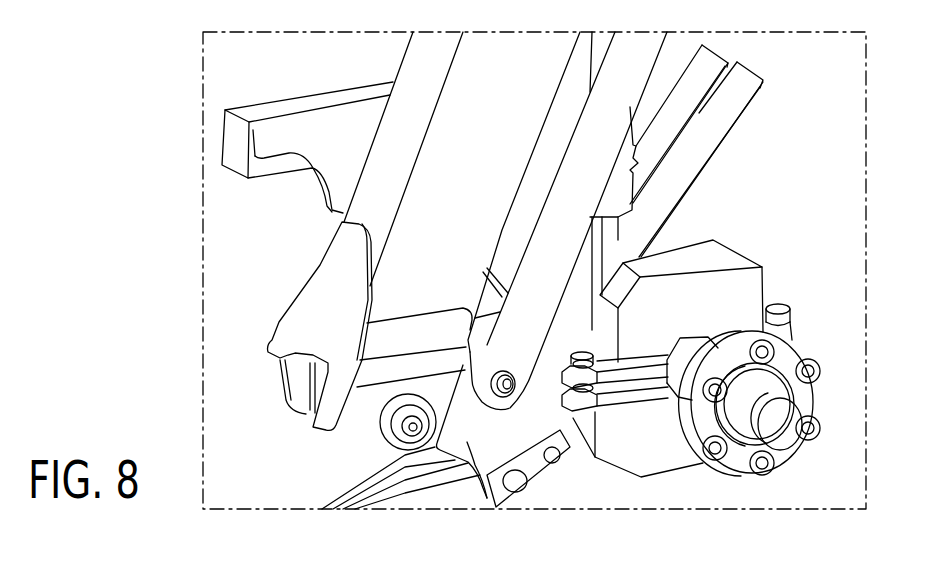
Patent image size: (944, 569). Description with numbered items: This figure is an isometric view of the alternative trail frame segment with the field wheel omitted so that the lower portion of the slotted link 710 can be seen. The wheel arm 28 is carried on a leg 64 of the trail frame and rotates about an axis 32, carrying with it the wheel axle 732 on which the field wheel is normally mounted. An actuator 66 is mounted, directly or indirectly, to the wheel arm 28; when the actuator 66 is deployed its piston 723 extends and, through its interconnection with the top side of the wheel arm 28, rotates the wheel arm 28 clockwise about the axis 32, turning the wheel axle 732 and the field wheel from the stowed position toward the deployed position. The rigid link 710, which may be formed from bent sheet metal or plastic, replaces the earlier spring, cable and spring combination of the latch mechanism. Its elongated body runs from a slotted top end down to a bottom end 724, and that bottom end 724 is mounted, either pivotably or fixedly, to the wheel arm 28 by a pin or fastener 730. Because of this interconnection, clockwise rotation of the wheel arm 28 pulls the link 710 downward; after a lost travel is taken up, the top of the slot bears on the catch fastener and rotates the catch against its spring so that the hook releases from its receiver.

The leg 64 is at (473, 98).
The actuator 66 is at (634, 163).
The piston 723 is at (605, 243).
The link 710 is at (553, 248).
The wheel axle 732 is at (777, 362).
The axis 32 is at (407, 435).
The wheel arm 28 is at (468, 442).
The bottom end 724 is at (503, 418).
The pin or fastener 730 is at (512, 388).